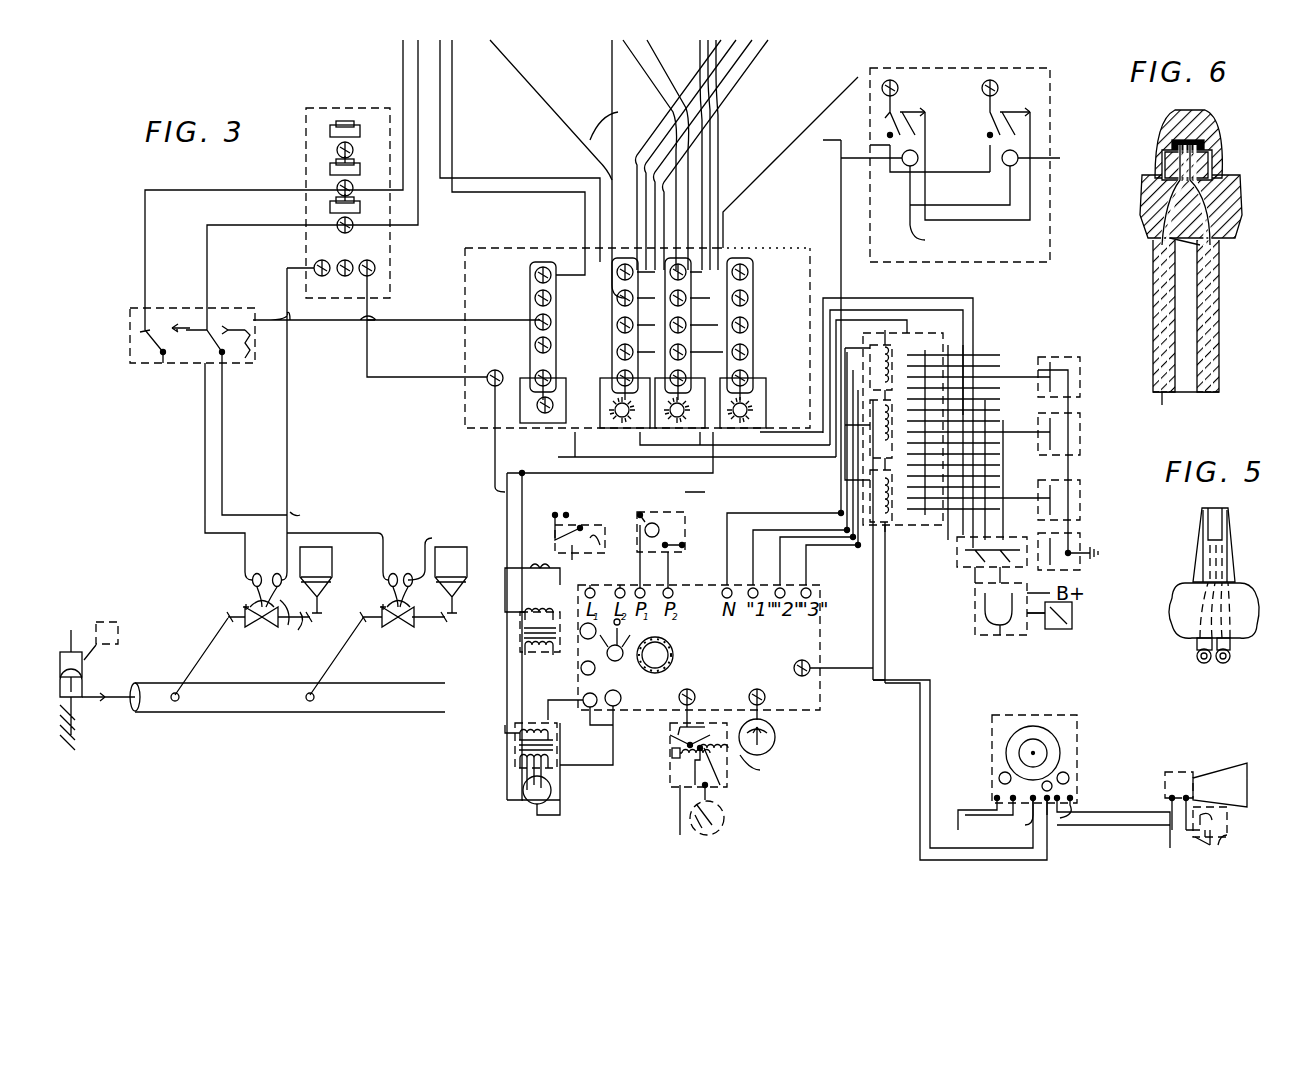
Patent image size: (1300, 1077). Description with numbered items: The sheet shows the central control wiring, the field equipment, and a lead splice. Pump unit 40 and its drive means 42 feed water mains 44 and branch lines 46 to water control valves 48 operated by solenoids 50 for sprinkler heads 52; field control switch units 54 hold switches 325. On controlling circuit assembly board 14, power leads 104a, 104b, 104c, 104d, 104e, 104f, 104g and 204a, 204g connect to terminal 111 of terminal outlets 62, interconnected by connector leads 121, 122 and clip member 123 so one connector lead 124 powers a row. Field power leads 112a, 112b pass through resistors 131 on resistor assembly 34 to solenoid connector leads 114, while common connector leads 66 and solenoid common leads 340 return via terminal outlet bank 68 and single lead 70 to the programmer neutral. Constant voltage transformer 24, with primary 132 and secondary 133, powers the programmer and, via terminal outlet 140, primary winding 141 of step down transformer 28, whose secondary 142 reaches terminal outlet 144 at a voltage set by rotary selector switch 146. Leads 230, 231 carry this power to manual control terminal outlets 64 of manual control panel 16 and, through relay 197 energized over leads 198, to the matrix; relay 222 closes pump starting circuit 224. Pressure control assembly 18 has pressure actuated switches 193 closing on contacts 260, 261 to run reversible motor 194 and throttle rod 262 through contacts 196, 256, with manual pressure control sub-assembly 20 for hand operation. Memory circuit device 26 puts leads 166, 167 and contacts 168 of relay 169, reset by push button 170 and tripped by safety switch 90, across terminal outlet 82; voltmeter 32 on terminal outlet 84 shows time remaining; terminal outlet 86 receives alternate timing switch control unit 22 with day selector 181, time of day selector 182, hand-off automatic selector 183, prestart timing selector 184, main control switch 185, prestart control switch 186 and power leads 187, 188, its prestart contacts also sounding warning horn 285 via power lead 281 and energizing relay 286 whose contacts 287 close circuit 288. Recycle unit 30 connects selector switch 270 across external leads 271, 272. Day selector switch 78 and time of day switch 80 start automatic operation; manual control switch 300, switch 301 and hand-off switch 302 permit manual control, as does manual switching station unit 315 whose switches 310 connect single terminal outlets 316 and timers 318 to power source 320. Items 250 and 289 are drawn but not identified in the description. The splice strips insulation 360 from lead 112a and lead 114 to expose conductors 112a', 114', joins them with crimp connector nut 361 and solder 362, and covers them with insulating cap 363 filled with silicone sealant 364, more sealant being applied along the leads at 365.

In FIG. 3, the controlling circuit assembly board 14 is at (462, 263).
In FIG. 3, the manual control panel 16 is at (525, 305).
In FIG. 3, the pump unit output pressure control assembly 18 is at (1092, 415).
In FIG. 3, the manual pressure control sub-assembly 20 is at (1088, 545).
In FIG. 3, the alternate timing switch control unit 22 is at (1060, 708).
In FIG. 3, the constant output voltage transformer unit 24 is at (518, 633).
In FIG. 3, the memory circuit device 26 is at (668, 795).
In FIG. 3, the multitap step down transformer 28 is at (505, 768).
In FIG. 3, the recycle unit 30 is at (680, 505).
In FIG. 3, the circuit operation time remaining indicator 32 is at (775, 750).
In FIG. 3, the resistor assembly 34 is at (300, 160).
In FIG. 3, the pump unit 40 is at (85, 705).
In FIG. 3, the drive means 42 is at (1072, 620).
In FIG. 3, the water mains 44 is at (285, 712).
In FIG. 3, the branch lines 46 is at (335, 650).
In FIG. 3, the water control valves 48 is at (246, 628).
In FIG. 3, the electrical solenoids 50 is at (275, 627).
In FIG. 3, the sprinkler heads 52 is at (333, 555).
In FIG. 3, the manual field control switch units 54 is at (140, 372).
In FIG. 3, the quick connect terminal outlet 62 is at (622, 370).
In FIG. 3, the manual control quick connect terminal outlets 64 is at (538, 368).
In FIG. 3, the common connector leads 66 is at (290, 465).
In FIG. 3, the terminal outlet bank 68 is at (343, 280).
In FIG. 3, the single lead 70 is at (555, 457).
In FIG. 3, the clock operated day selector switch 78 is at (593, 642).
In FIG. 3, the clock operated time of day selector switch 80 is at (594, 673).
In FIG. 3, the quick connect terminal outlet 82 is at (695, 692).
In FIG. 3, the quick connect terminal outlet 84 is at (762, 690).
In FIG. 3, the quick connect terminal outlet 86 is at (802, 660).
In FIG. 3, the pressure operated safety switch 90 is at (716, 830).
In FIG. 3, the power lead 104a is at (508, 192).
In FIG. 3, the power lead 104b is at (478, 178).
In FIG. 3, the power lead 104c is at (612, 92).
In FIG. 3, the power lead 104d is at (625, 165).
In FIG. 3, the power lead 104e is at (745, 72).
In FIG. 3, the power lead 104f is at (740, 95).
In FIG. 3, the power lead 104g is at (725, 108).
In FIG. 3, the terminal 111 is at (615, 327).
In FIG. 3, the field power lead 112a is at (243, 176).
In FIG. 5, the field power lead 112a is at (1257, 650).
In FIG. 6, the field power lead 112a is at (1254, 338).
In FIG. 5, the conductor 112a' is at (1260, 680).
In FIG. 6, the conductor 112a' is at (1254, 371).
In FIG. 3, the field power lead 112b is at (207, 263).
In FIG. 3, the solenoid terminal connector lead 114 is at (305, 598).
In FIG. 5, the solenoid terminal connector lead 114 is at (1177, 652).
In FIG. 6, the solenoid terminal connector lead 114 is at (1125, 268).
In FIG. 5, the conductor 114' is at (1204, 680).
In FIG. 6, the conductor 114' is at (1173, 412).
In FIG. 3, the connector lead 121 is at (750, 352).
In FIG. 3, the connector lead 122 is at (750, 325).
In FIG. 3, the clip member 123 is at (740, 272).
In FIG. 3, the connector lead 124 is at (762, 403).
In FIG. 3, the resistor 131 is at (335, 163).
In FIG. 3, the primary 132 is at (540, 662).
In FIG. 3, the secondary 133 is at (545, 612).
In FIG. 3, the quick connect terminal outlet 140 is at (590, 708).
In FIG. 3, the primary winding 141 is at (505, 743).
In FIG. 3, the secondary 142 is at (515, 760).
In FIG. 3, the quick connect terminal outlet 144 is at (622, 692).
In FIG. 3, the rotary selector switch 146 is at (530, 800).
In FIG. 3, the lead 166 is at (678, 730).
In FIG. 3, the lead 167 is at (734, 766).
In FIG. 3, the relay contacts 168 is at (690, 745).
In FIG. 3, the relay 169 is at (712, 760).
In FIG. 3, the push button 170 is at (678, 760).
In FIG. 3, the day selector 181 is at (1068, 772).
In FIG. 3, the time of day selector 182 is at (1045, 740).
In FIG. 3, the hand-off automatic selector 183 is at (1053, 786).
In FIG. 3, the prestart timing selector 184 is at (1000, 772).
In FIG. 3, the main control switch 185 is at (1030, 818).
In FIG. 3, the prestart control switch 186 is at (1070, 810).
In FIG. 3, the power lead 187 is at (960, 805).
In FIG. 3, the power lead 188 is at (958, 831).
In FIG. 3, the pressure actuated switch 193 is at (1080, 355).
In FIG. 3, the reversible drive motor 194 is at (985, 638).
In FIG. 3, the contact switch 196 is at (920, 375).
In FIG. 3, the relay 197 is at (880, 370).
In FIG. 3, the leads 198 is at (848, 500).
In FIG. 3, the power lead 204a is at (548, 100).
In FIG. 3, the power lead 204g is at (783, 155).
In FIG. 3, the relay 222 is at (598, 528).
In FIG. 3, the pump starting circuit lead 224 is at (570, 530).
In FIG. 3, the lead 230 is at (505, 490).
In FIG. 3, the lead 231 is at (505, 473).
In FIG. 3, the heaters 250 is at (650, 430).
In FIG. 3, the contact 256 is at (930, 385).
In FIG. 3, the high pressure contact 260 is at (1055, 362).
In FIG. 3, the low pressure contact 261 is at (1080, 387).
In FIG. 3, the throttle rod 262 is at (1045, 628).
In FIG. 3, the multiposition selector switch 270 is at (660, 526).
In FIG. 3, the external lead 271 is at (875, 690).
In FIG. 3, the external lead 272 is at (895, 672).
In FIG. 3, the power lead 281 is at (1140, 810).
In FIG. 3, the warning device 285 is at (1225, 765).
In FIG. 3, the relay 286 is at (1205, 840).
In FIG. 3, the contacts 287 is at (1227, 820).
In FIG. 3, the lubricating valve circuit 288 is at (1222, 848).
In FIG. 3, the conductor 289 is at (1148, 825).
In FIG. 3, the manual control switch 300 is at (674, 660).
In FIG. 3, the switch 301 is at (630, 640).
In FIG. 3, the hand-off switch 302 is at (485, 405).
In FIG. 3, the double pole single throw switch 310 is at (970, 125).
In FIG. 3, the manual switching station unit 315 is at (1052, 108).
In FIG. 3, the single terminal quick connect outlet 316 is at (988, 85).
In FIG. 3, the timer 318 is at (835, 160).
In FIG. 3, the power source 320 is at (970, 183).
In FIG. 3, the field switch 325 is at (153, 340).
In FIG. 3, the solenoid common lead 340 is at (300, 600).
In FIG. 6, the insulation 360 is at (1220, 283).
In FIG. 6, the threaded crimp connector nut 361 is at (1222, 170).
In FIG. 6, the soldering 362 is at (1205, 145).
In FIG. 3, the insulating cap 363 is at (275, 588).
In FIG. 5, the insulating cap 363 is at (1233, 520).
In FIG. 6, the insulating cap 363 is at (1215, 156).
In FIG. 5, the silicone sealant 364 is at (1242, 583).
In FIG. 6, the silicone sealant 364 is at (1210, 115).
In FIG. 6, the sealant along insulated portions 365 is at (1222, 238).